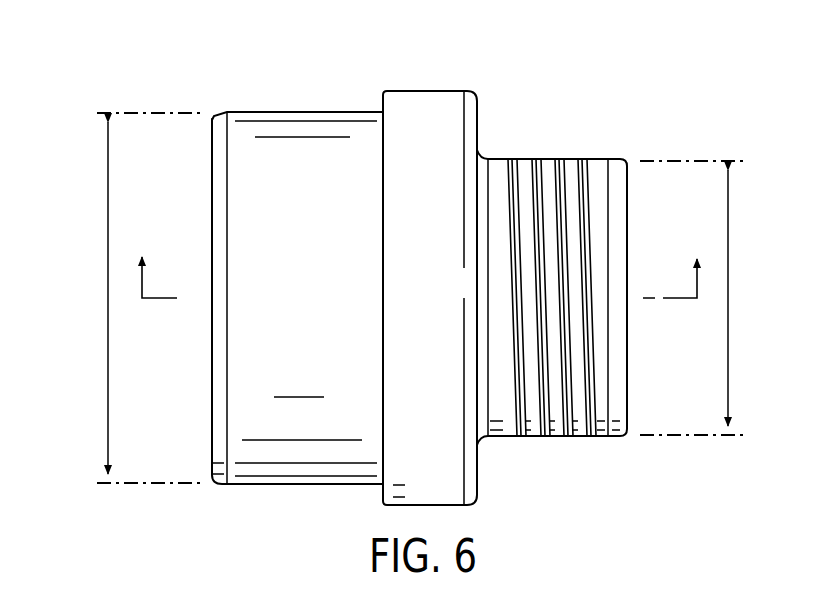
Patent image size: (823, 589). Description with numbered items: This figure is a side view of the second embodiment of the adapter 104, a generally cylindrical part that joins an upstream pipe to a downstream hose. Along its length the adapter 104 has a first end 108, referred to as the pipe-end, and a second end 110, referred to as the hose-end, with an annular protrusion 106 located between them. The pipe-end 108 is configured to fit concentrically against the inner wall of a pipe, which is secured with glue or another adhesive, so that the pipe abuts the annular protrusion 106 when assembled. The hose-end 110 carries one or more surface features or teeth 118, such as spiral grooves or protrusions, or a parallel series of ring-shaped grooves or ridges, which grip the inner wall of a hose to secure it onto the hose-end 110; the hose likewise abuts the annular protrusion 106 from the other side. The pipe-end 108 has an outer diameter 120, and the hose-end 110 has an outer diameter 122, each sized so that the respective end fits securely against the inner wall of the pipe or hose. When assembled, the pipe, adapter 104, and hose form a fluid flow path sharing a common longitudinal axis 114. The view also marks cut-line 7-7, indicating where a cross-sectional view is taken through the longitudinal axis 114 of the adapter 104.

The adapter 104 is at (559, 58).
The annular protrusion 106 is at (427, 91).
The first end 108 is at (256, 112).
The second end 110 is at (597, 159).
The longitudinal axis 114 is at (197, 298).
The surface features 118 is at (523, 442).
The outer diameter of pipe-end 120 is at (108, 298).
The outer diameter of hose-end 122 is at (728, 300).
The cut-line 7- 7 is at (418, 267).